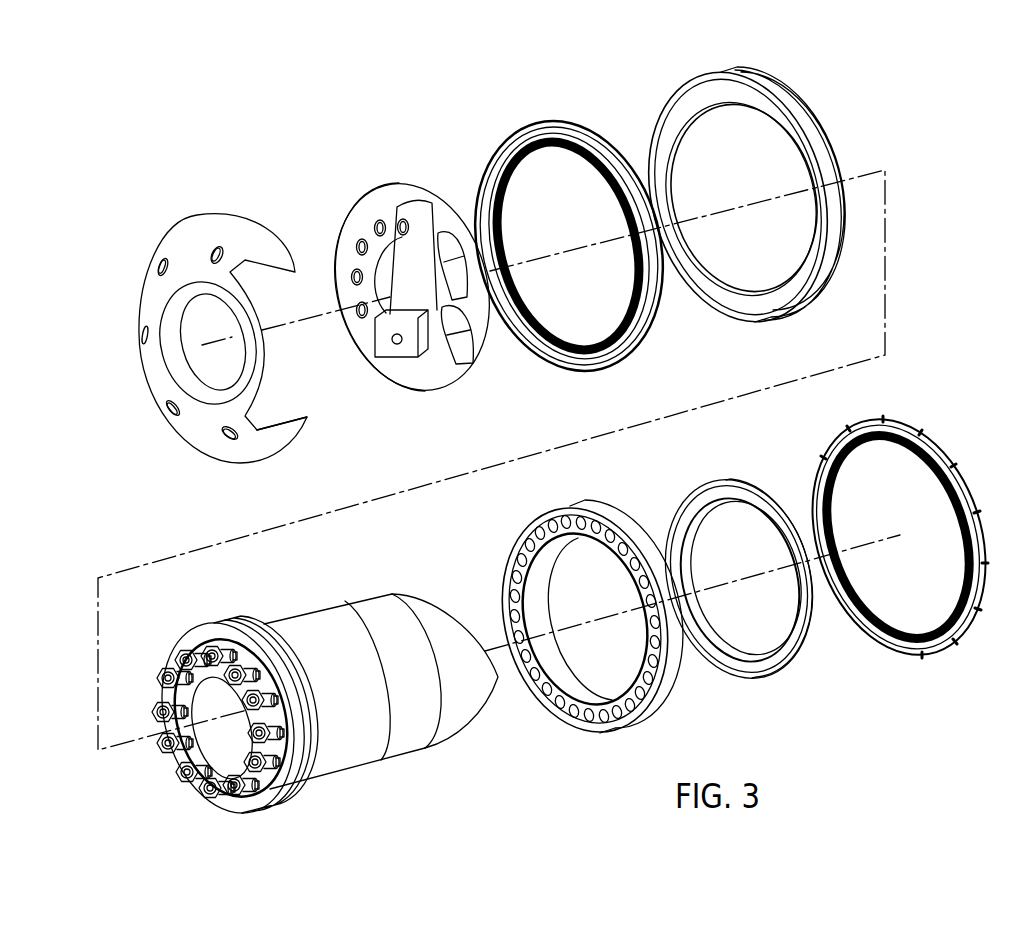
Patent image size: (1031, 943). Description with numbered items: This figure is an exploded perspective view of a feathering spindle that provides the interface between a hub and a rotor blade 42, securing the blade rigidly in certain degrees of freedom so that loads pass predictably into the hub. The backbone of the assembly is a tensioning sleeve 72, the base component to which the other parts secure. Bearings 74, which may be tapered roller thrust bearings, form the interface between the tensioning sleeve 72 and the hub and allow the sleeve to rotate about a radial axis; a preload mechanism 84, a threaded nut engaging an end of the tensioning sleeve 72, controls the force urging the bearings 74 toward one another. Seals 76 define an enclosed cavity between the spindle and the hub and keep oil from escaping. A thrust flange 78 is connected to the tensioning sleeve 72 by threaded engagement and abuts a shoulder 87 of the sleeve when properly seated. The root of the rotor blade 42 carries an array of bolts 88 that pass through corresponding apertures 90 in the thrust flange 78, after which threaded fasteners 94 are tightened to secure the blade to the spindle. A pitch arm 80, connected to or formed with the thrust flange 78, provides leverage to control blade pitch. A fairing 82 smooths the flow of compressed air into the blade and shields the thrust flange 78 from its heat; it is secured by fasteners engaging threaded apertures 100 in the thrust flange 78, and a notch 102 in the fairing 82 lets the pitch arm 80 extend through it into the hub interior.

The rotor blade 42 is at (299, 701).
The tensioning sleeve 72 is at (340, 762).
The bearings 74 is at (819, 112).
The seals 76 is at (563, 118).
The thrust flange 78 is at (228, 438).
The pitch arm 80 is at (424, 347).
The fairing 82 is at (216, 222).
The preload mechanism 84 is at (745, 474).
The shoulder 87 is at (206, 620).
The bolts 88 is at (195, 722).
The apertures 90 is at (398, 217).
The threaded fasteners 94 is at (167, 730).
The threaded apertures 100 is at (337, 283).
The notch 102 is at (278, 430).